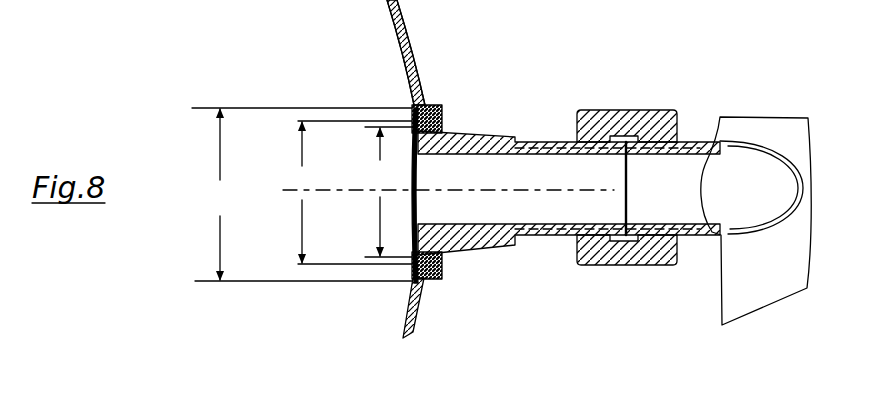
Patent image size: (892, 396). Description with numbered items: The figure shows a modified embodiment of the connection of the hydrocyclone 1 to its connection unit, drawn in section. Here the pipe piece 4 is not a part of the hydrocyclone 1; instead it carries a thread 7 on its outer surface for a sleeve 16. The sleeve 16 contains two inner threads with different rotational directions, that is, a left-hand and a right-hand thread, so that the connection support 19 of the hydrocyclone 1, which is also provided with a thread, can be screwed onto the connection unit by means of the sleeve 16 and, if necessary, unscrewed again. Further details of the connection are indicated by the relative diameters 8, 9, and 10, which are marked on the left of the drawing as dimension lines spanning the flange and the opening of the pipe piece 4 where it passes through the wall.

The hydrocyclone 1 is at (760, 298).
The pipe piece 4 is at (487, 131).
The thread 7 is at (557, 253).
The relative diameter 8 is at (302, 194).
The relative diameter 9 is at (352, 192).
The relative diameter 10 is at (388, 192).
The sleeve 16 is at (588, 256).
The connection support 19 is at (725, 182).